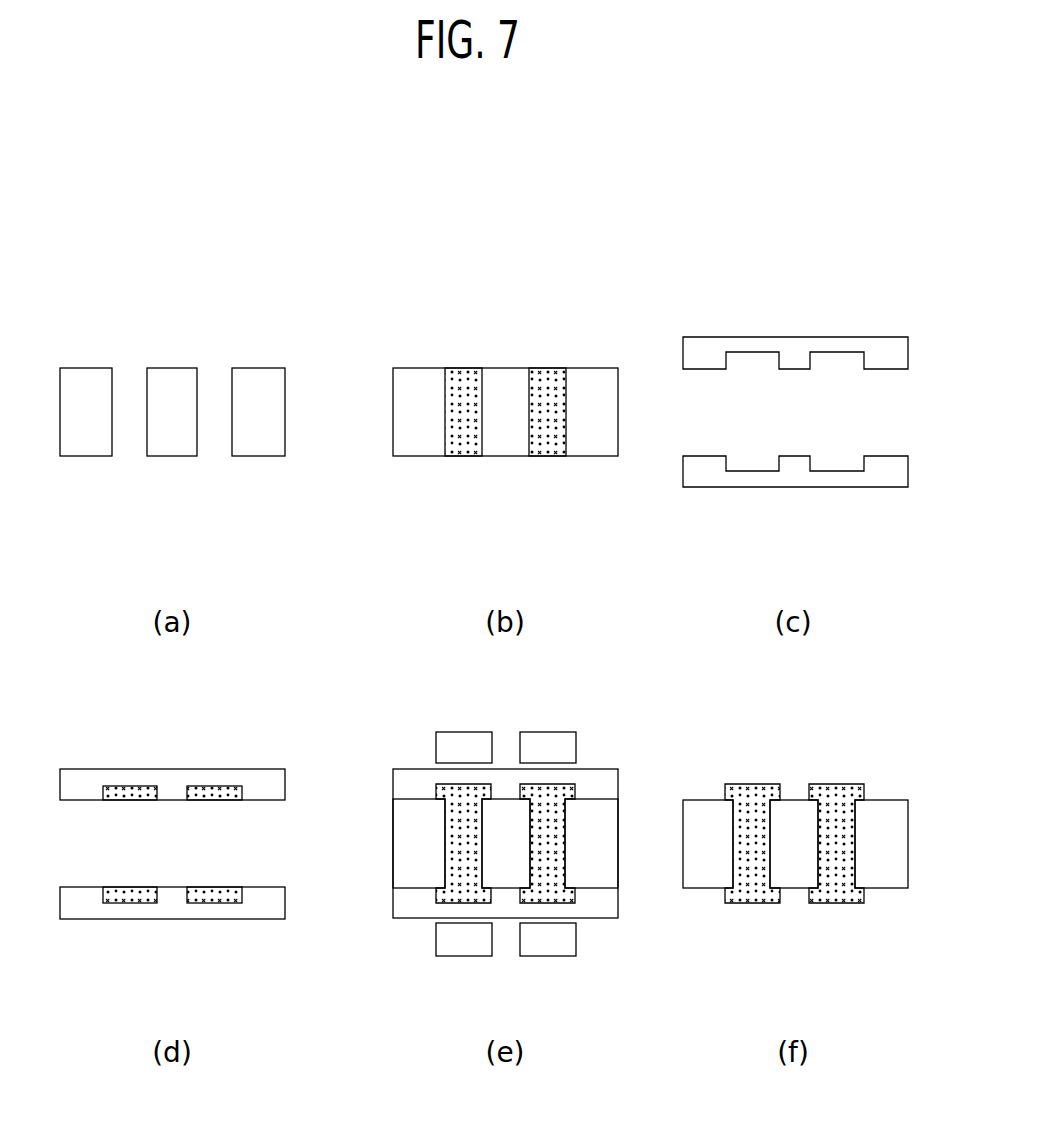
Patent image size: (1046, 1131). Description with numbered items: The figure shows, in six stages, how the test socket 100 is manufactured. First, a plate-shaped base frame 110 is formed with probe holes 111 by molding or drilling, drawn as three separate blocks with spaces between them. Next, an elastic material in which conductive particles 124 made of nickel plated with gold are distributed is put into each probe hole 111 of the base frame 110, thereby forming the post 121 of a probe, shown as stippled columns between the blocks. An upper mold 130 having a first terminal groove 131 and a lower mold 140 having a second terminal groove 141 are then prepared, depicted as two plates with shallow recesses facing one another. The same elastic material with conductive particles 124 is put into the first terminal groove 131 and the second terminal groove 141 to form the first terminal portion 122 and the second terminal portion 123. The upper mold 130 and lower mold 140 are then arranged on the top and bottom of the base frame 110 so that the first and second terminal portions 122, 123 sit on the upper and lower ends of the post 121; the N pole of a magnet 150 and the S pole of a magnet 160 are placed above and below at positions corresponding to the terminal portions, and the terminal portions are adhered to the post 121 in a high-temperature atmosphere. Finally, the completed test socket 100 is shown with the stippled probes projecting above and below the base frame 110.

The test socket 100 is at (876, 777).
The base frame 110 is at (272, 375).
The probe hole 111 is at (215, 375).
The post 121 is at (557, 372).
The first terminal portion 122 is at (148, 787).
The second terminal portion 123 is at (110, 902).
The conductive particles 124 is at (532, 372).
The upper mold 130 is at (885, 343).
The first terminal groove 131 is at (750, 358).
The lower mold 140 is at (888, 482).
The second terminal groove 141 is at (752, 466).
The magnet 150 is at (576, 735).
The magnet 160 is at (576, 950).